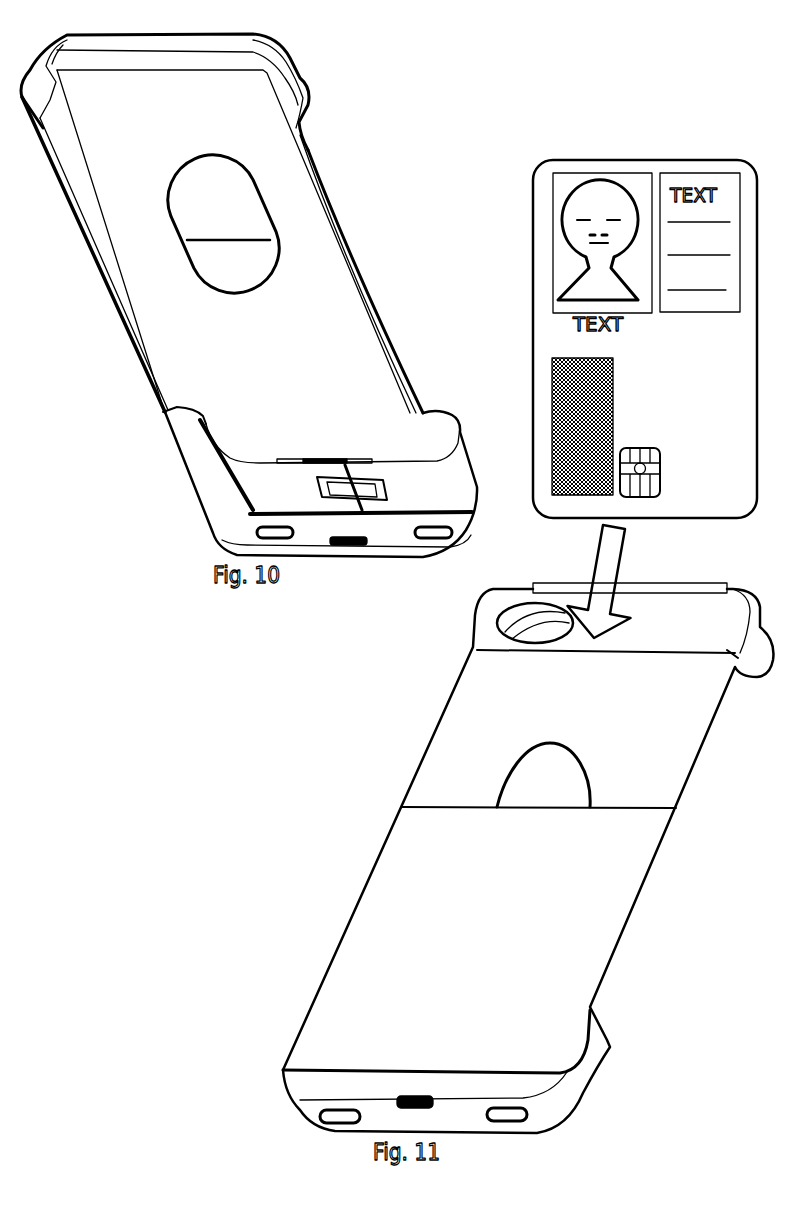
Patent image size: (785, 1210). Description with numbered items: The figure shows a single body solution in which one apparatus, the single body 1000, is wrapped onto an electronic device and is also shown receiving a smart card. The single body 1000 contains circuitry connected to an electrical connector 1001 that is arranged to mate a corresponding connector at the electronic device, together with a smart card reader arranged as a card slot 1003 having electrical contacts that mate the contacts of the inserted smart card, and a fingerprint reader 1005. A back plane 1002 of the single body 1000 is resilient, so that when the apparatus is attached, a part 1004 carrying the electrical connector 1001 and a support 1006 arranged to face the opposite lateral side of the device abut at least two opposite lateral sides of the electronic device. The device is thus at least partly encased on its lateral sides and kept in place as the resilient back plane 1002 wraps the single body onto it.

In FIG. 10, the single body 1000 is at (195, 453).
In FIG. 10, the electrical connector 1001 is at (350, 462).
In FIG. 10, the back plane 1002 is at (131, 305).
In FIG. 11, the card slot 1003 is at (477, 645).
In FIG. 10, the part having the electrical connector 1004 is at (263, 480).
In FIG. 10, the fingerprint reader 1005 is at (320, 493).
In FIG. 10, the support 1006 is at (272, 56).